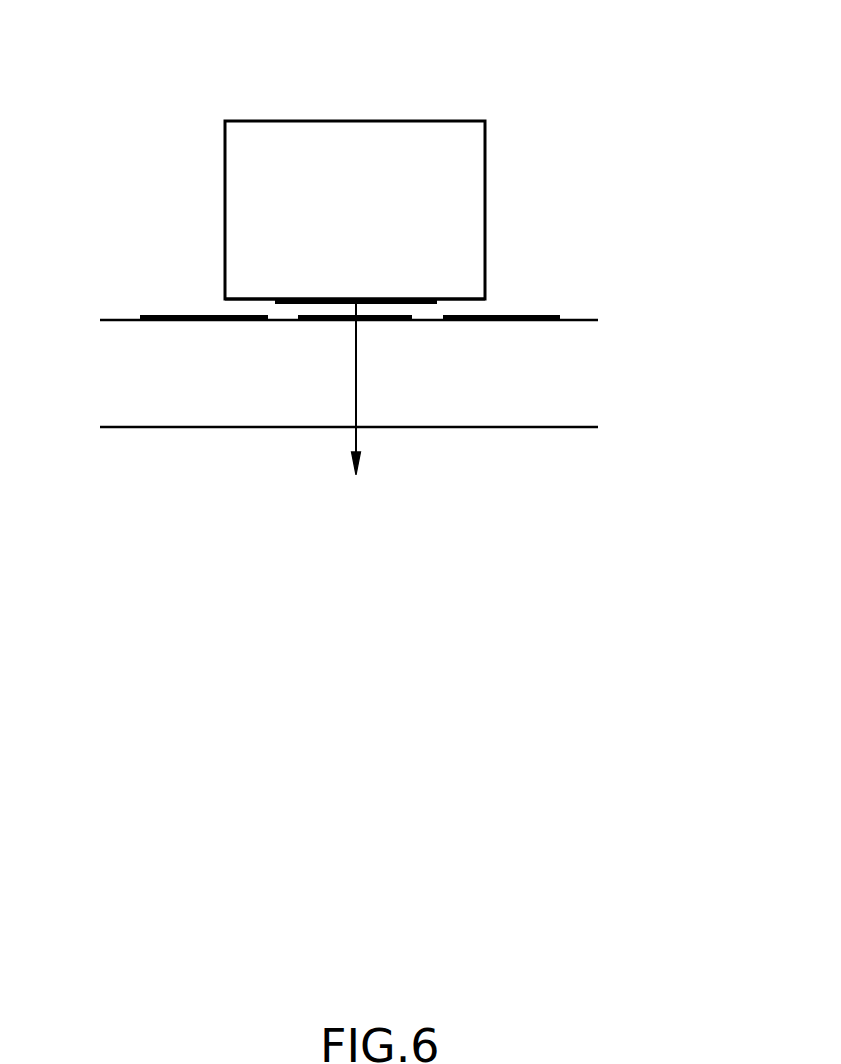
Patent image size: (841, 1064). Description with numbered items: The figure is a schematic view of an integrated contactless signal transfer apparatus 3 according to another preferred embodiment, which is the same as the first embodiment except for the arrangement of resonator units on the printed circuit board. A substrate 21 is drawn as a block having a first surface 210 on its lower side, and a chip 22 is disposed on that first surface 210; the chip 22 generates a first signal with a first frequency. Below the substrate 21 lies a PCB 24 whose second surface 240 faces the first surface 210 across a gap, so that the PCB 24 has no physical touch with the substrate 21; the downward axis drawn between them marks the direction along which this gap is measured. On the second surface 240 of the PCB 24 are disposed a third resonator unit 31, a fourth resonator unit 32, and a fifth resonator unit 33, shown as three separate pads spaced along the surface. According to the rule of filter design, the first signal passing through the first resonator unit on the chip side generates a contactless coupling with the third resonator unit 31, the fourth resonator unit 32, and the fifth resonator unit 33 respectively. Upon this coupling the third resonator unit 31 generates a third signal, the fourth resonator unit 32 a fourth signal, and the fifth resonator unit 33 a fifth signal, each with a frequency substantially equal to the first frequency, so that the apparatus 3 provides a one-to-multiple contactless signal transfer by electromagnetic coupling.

The integrated contactless signal transfer apparatus 3 is at (142, 73).
The substrate 21 is at (485, 172).
The chip 22 is at (280, 298).
The first surface 210 is at (437, 303).
The PCB 24 is at (540, 363).
The second surface 240 is at (598, 320).
The third resonator unit 31 is at (153, 322).
The fourth resonator unit 32 is at (312, 322).
The fifth resonator unit 33 is at (471, 322).